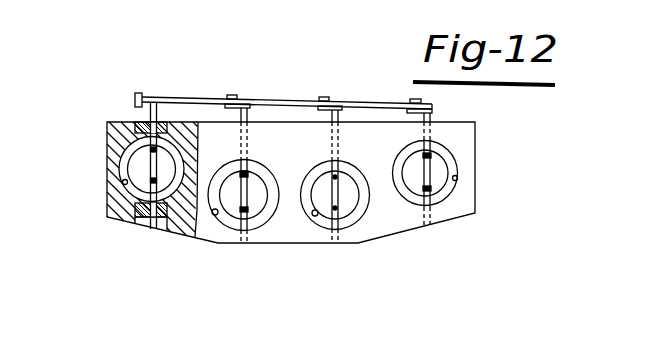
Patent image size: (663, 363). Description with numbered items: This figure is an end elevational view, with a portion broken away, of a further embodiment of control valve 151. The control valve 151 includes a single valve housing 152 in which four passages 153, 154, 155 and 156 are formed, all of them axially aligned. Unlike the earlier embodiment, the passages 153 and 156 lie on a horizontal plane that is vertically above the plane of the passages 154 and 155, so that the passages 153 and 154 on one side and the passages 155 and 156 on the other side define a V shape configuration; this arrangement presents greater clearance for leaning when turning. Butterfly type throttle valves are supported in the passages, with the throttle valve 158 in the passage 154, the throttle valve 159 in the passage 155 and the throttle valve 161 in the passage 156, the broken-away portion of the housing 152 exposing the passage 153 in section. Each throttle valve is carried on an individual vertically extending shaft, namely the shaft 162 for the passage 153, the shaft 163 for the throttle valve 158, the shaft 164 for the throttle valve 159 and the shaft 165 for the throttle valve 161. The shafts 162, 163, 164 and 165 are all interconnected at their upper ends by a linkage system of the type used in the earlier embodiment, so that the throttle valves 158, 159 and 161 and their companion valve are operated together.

The control valve 151 is at (124, 209).
The valve housing 152 is at (107, 157).
The passage 153 is at (122, 181).
The passage 154 is at (213, 214).
The passage 155 is at (316, 215).
The passage 156 is at (458, 180).
The butterfly type throttle valve 158 is at (265, 216).
The butterfly type throttle valve 159 is at (360, 211).
The butterfly type throttle valve 161 is at (443, 189).
The shaft 162 is at (162, 229).
The shaft 163 is at (221, 226).
The shaft 164 is at (338, 220).
The shaft 165 is at (434, 199).